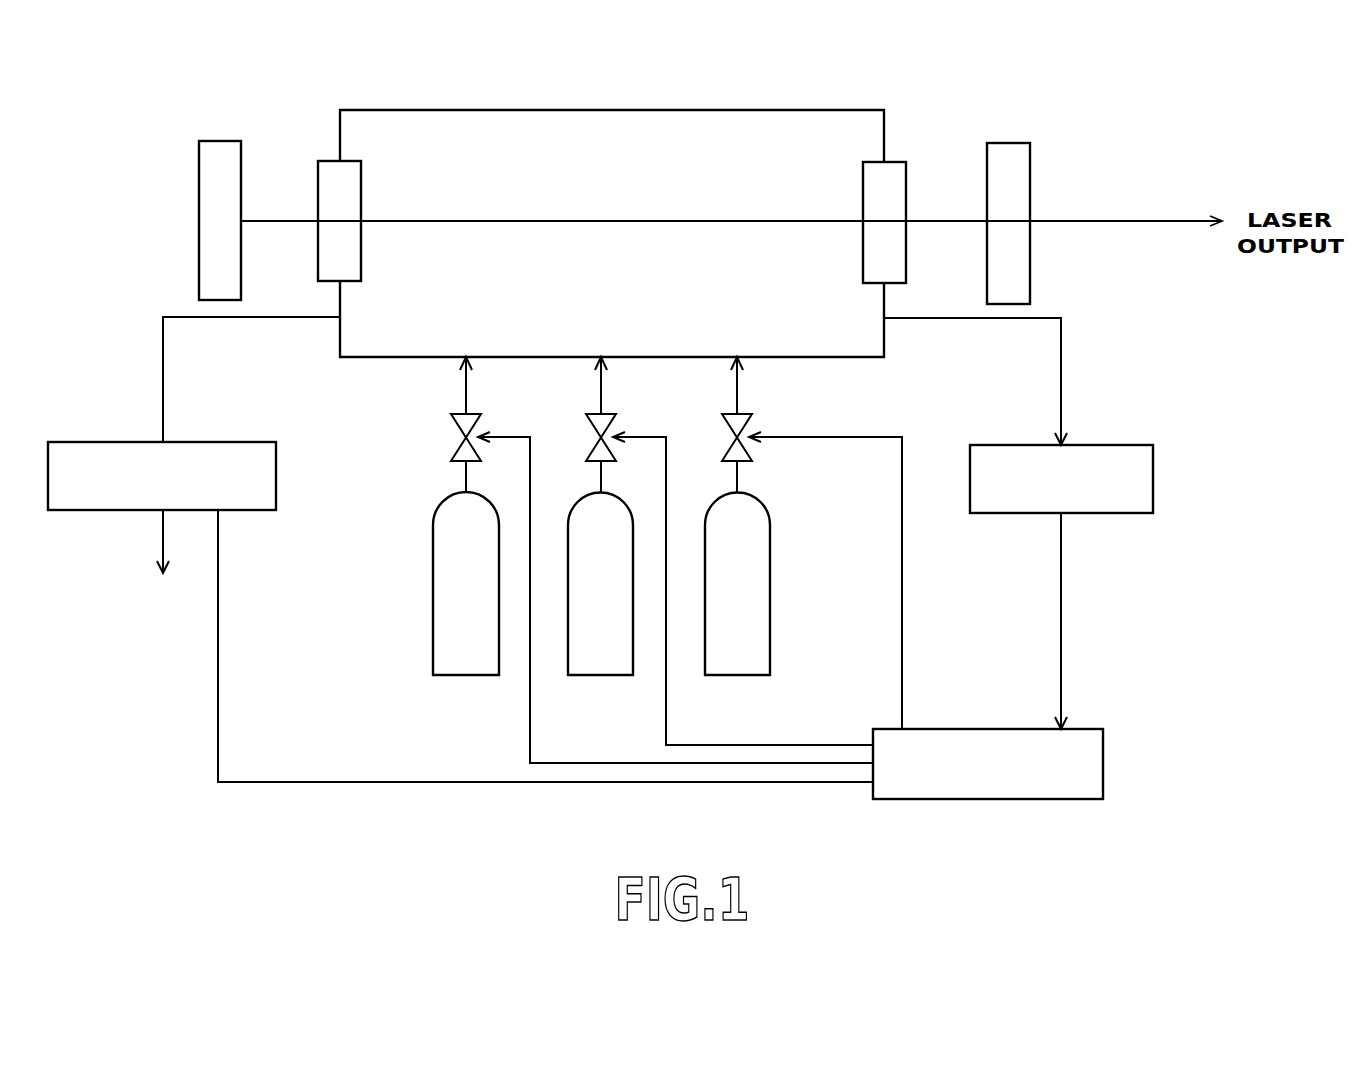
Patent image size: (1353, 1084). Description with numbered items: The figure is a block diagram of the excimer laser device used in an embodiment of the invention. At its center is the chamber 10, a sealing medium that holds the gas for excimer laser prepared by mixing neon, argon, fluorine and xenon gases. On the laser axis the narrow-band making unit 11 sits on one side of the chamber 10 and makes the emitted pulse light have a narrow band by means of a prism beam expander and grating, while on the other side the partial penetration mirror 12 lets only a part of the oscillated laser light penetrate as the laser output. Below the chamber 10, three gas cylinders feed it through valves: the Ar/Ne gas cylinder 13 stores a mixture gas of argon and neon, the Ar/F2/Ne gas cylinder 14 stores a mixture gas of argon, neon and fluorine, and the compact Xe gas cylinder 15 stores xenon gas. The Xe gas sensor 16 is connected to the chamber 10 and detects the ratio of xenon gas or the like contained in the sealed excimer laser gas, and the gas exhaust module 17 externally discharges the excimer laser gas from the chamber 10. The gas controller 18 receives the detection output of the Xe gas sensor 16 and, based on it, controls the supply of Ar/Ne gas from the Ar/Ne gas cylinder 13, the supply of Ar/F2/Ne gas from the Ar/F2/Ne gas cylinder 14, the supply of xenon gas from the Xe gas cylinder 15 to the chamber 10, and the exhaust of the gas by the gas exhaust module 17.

The chamber 10 is at (660, 110).
The narrow-band making unit 11 is at (216, 141).
The partial penetration mirror 12 is at (1030, 170).
The Ar/Ne gas cylinder 13 is at (603, 675).
The Ar/F2/Ne gas cylinder 14 is at (740, 675).
The Xe gas cylinder 15 is at (463, 675).
The Xe gas sensor 16 is at (1153, 475).
The gas exhaust module 17 is at (276, 475).
The gas controller 18 is at (1103, 755).